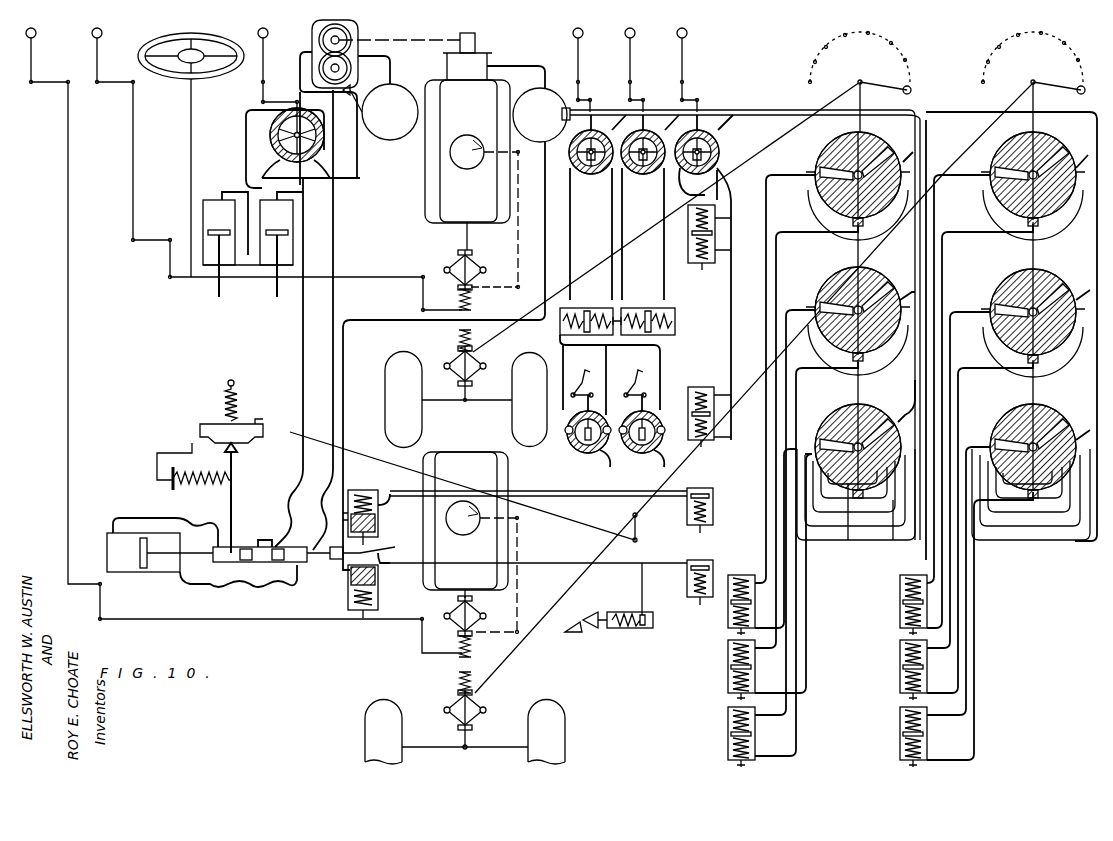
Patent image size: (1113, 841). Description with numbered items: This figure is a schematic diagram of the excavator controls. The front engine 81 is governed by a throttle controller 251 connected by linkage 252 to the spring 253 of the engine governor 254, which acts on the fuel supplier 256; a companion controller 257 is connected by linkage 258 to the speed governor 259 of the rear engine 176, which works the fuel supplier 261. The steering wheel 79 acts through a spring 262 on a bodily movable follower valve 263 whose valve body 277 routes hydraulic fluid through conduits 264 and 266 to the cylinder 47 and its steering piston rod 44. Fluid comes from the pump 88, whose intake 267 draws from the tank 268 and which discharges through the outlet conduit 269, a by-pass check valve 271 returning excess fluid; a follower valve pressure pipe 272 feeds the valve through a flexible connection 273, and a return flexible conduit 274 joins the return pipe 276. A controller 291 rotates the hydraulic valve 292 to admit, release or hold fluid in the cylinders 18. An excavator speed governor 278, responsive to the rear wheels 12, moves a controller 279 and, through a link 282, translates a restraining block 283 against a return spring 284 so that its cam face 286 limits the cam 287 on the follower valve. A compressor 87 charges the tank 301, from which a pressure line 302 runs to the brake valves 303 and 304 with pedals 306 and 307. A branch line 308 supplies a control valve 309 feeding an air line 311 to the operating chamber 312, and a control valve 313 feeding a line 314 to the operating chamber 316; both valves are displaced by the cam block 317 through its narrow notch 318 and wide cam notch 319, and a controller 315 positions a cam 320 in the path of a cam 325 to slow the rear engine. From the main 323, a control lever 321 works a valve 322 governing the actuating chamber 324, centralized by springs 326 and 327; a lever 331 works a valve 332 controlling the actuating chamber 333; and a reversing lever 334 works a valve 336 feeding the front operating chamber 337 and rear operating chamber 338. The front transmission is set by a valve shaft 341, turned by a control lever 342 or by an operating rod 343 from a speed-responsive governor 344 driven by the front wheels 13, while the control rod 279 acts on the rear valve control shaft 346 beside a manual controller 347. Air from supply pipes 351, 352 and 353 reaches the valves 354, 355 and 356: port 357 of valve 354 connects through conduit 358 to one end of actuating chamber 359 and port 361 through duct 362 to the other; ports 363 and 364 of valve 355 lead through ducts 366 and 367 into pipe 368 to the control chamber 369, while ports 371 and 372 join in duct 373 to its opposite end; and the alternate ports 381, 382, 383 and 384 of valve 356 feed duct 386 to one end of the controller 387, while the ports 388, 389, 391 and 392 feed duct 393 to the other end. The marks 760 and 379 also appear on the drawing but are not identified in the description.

The controller 257 is at (32, 60).
The throttle or governor controller 251 is at (98, 60).
The linkage 252 is at (170, 260).
The linkage 258 is at (69, 340).
The steering wheel 79 is at (180, 80).
The controller 291 is at (258, 40).
The hydraulic valve 292 is at (270, 133).
The cylinders 18 is at (253, 244).
The pump 88 is at (356, 34).
The outlet conduit 269 is at (300, 60).
The intake 267 is at (392, 62).
The by-pass check valve 271 is at (380, 112).
The tank 268 is at (393, 140).
The return pipe 276 is at (360, 181).
The follower valve pressure pipe 272 is at (334, 246).
The compressor 87 is at (486, 60).
The front engine 81 is at (440, 195).
The fuel supplier 256 is at (468, 169).
The tank 301 is at (541, 115).
The pressure line 302 is at (544, 236).
The engine governor 254 is at (455, 262).
The spring 253 is at (476, 305).
The speed-responsive governor 344 is at (460, 358).
The operating rod 343 is at (823, 103).
The front ground-engaging wheels 13 is at (392, 386).
The supply pipe 323 is at (606, 112).
The control lever 321 is at (579, 60).
The lever 331 is at (631, 60).
The reversing lever 334 is at (683, 60).
The valve 322 is at (592, 176).
The valve 332 is at (647, 176).
The valve 336 is at (722, 150).
The front operating chamber 337 is at (703, 270).
The actuating chamber 324 is at (586, 311).
The actuating chamber 333 is at (644, 311).
The spring 327 is at (645, 300).
The spring 326 is at (560, 345).
The pedal 306 is at (587, 383).
The pedal 307 is at (640, 383).
The valve 303 is at (580, 452).
The valve 304 is at (644, 452).
The rear operating chamber 338 is at (701, 387).
The air line 311 is at (580, 491).
The operating chamber 312 is at (713, 505).
The line 314 is at (488, 497).
The operating chamber 316 is at (688, 595).
The controller 315 is at (640, 628).
The cam 320 is at (595, 612).
The cam 325 is at (573, 637).
The branch line 308 is at (346, 440).
The control valve 309 is at (360, 509).
The narrow notch 318 is at (380, 520).
The cam block 317 is at (380, 553).
The wide cam notch 319 is at (345, 572).
The control valve 313 is at (378, 598).
The engine 176 is at (468, 460).
The fuel supplier 261 is at (465, 535).
The speed governor 259 is at (474, 606).
The spring 760 is at (472, 645).
The controller 279 is at (1000, 110).
The excavator speed governor 278 is at (482, 704).
The rear wheels 12 is at (566, 722).
The return spring 284 is at (238, 395).
The restraining block 283 is at (208, 423).
The link 282 is at (262, 418).
The cam 287 is at (238, 456).
The cam face 286 is at (215, 445).
The spring 262 is at (208, 486).
The cylinder 47 is at (107, 553).
The steering piston rod 44 is at (196, 558).
The conduit 264 is at (158, 518).
The conduit 266 is at (220, 588).
The valve body 277 is at (225, 562).
The follower valve 263 is at (257, 540).
The return flexible conduit 274 is at (285, 494).
The flexible connection 273 is at (318, 526).
The valve shaft 341 is at (863, 85).
The operator's control lever 342 is at (862, 102).
The valve control shaft 346 is at (1036, 85).
The manual controller 347 is at (1035, 102).
The valve 354 is at (830, 145).
The port 357 is at (812, 188).
The conduit 358 is at (797, 165).
The port 361 is at (884, 213).
The duct 362 is at (796, 230).
The valve 355 is at (838, 266).
The duct 366 is at (815, 300).
The port 363 is at (796, 330).
The duct 367 is at (818, 340).
The supply pipe 352 is at (903, 290).
The duct 373 is at (816, 362).
The port 371 is at (850, 352).
The port 364 is at (876, 356).
The valve 356 is at (823, 401).
The supply pipe 353 is at (918, 404).
The port 388 is at (856, 472).
The port 381 is at (812, 442).
The port 392 is at (900, 428).
The port 382 is at (839, 457).
The port 384 is at (887, 459).
The port 383 is at (866, 495).
The pipe 368 is at (766, 450).
The port 389 is at (848, 535).
The port 391 is at (893, 535).
The actuating chamber 359 is at (743, 594).
The control chamber 369 is at (728, 660).
The controller 387 is at (728, 730).
The duct 386 is at (807, 580).
The duct 393 is at (807, 612).
The supply pipe 351 is at (905, 152).
The port 372 is at (905, 305).
The motor 379 is at (1008, 467).